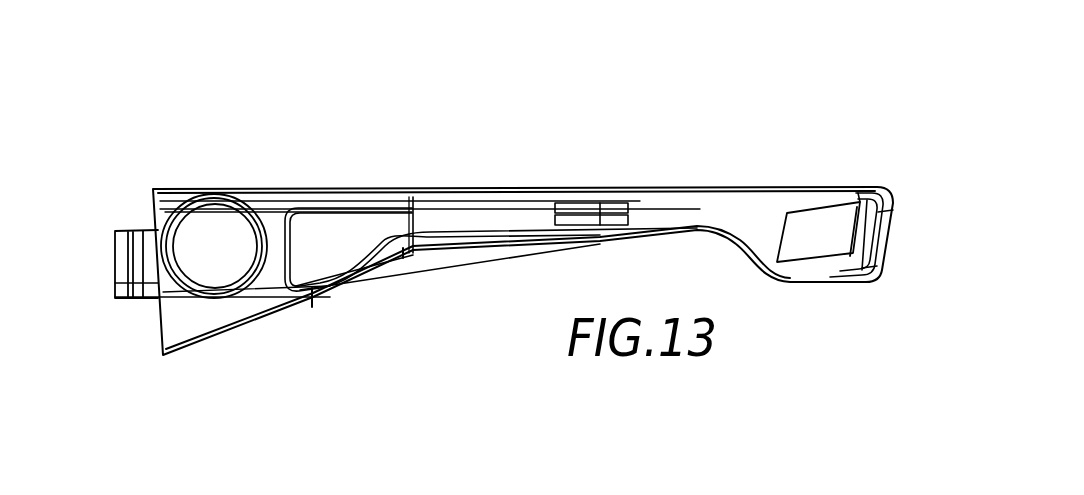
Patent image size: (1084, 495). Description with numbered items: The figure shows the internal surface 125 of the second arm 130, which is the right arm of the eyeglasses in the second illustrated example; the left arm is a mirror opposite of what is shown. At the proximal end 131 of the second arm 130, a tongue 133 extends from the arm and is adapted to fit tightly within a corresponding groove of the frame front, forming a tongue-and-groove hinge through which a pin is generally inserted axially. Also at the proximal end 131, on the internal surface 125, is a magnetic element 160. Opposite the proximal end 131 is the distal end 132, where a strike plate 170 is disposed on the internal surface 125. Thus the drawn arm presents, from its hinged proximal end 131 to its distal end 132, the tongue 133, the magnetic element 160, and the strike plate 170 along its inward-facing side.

The internal surface 125 is at (682, 207).
The second arm 130 is at (517, 189).
The proximal end 131 is at (104, 261).
The distal end 132 is at (912, 233).
The tongue 133 is at (115, 283).
The magnetic element 160 is at (265, 218).
The strike plate 170 is at (833, 222).